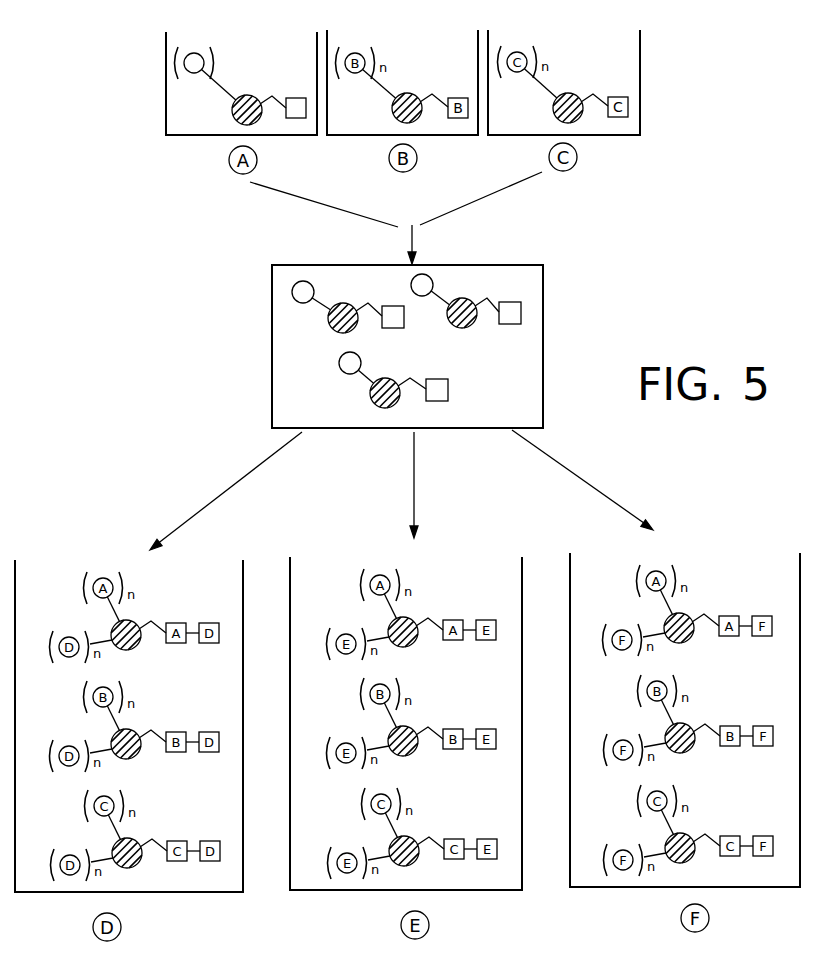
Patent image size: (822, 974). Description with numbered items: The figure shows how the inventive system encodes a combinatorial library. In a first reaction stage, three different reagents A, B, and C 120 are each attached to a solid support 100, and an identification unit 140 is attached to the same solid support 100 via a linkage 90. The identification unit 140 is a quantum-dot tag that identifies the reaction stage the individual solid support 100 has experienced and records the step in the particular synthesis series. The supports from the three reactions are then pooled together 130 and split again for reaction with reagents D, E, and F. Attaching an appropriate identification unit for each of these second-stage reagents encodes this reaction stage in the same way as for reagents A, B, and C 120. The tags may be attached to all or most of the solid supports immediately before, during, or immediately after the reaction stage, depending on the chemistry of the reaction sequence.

The linkage 90 is at (229, 90).
The solid support 100 is at (236, 123).
The reagents A, B, and C 120 is at (296, 96).
The pooled supports 130 is at (552, 326).
The identification unit 140 is at (189, 50).